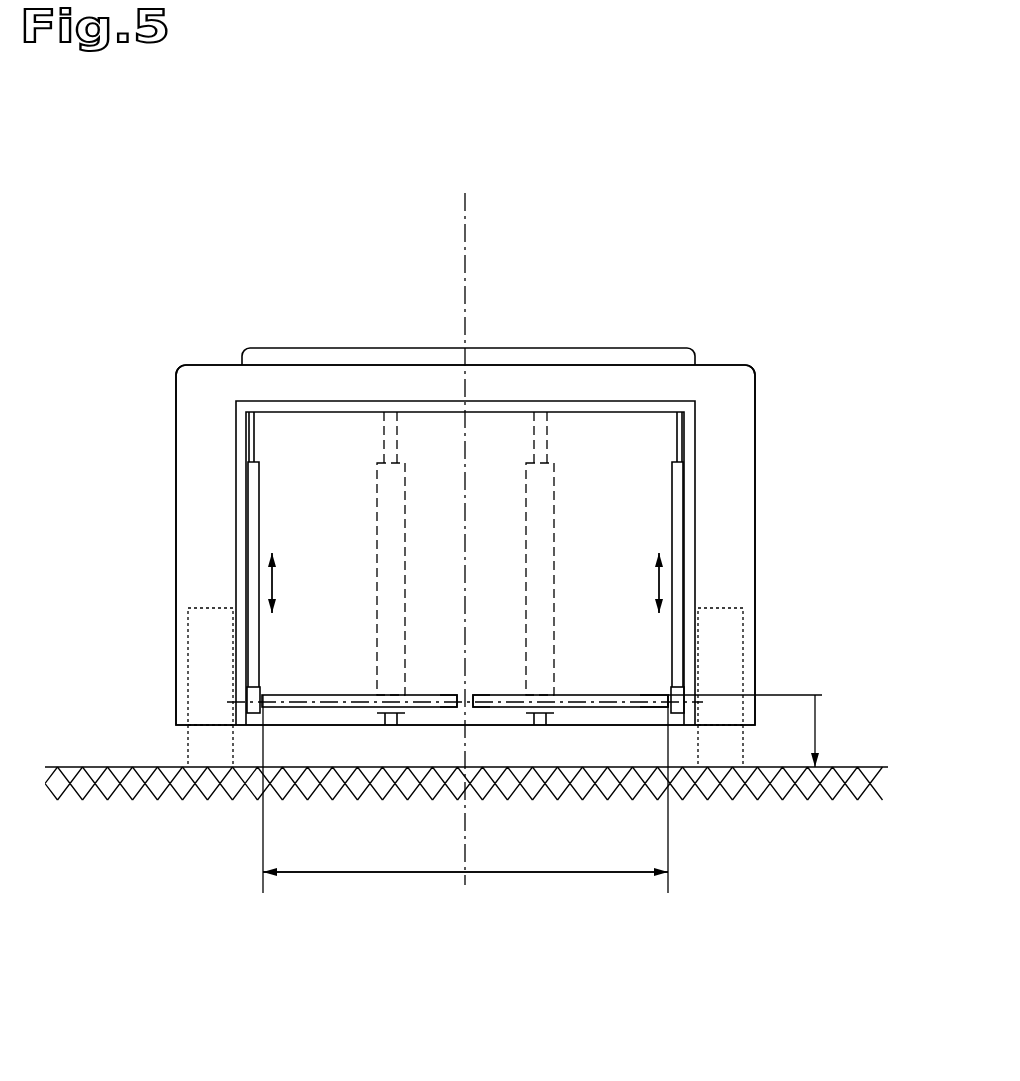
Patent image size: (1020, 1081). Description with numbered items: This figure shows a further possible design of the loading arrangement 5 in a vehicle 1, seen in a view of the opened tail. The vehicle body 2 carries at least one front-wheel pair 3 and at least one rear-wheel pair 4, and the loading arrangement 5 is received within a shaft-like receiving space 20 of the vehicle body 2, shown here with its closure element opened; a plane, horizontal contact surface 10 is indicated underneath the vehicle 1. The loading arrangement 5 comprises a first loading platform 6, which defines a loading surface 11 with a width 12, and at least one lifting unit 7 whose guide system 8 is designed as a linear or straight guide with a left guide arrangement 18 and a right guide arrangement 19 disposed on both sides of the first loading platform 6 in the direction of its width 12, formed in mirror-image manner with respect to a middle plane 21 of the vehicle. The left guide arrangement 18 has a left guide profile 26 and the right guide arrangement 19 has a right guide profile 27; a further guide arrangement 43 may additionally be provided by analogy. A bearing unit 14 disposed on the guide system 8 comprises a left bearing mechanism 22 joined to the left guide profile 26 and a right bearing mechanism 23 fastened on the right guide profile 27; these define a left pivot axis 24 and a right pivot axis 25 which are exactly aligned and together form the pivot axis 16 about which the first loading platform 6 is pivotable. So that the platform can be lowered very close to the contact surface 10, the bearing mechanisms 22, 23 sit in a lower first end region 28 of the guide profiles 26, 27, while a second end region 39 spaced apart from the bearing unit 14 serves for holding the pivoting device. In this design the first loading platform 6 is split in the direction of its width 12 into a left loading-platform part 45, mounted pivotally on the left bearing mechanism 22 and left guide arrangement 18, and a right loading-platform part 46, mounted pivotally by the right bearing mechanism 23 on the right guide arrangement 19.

The vehicle 1 is at (794, 117).
The vehicle body 2 is at (733, 393).
The front-wheel pair 3 is at (451, 737).
The rear-wheel pair 4 is at (170, 753).
The loading arrangement 5 is at (642, 440).
The first loading platform 6 is at (498, 665).
The lifting unit 7 is at (282, 460).
The guide system 8 is at (653, 488).
The contact surface 10 is at (849, 766).
The loading surface 11 is at (613, 697).
The width 12 is at (427, 887).
The bearing unit 14 is at (465, 790).
The pivot axis 16 is at (330, 702).
The left guide arrangement 18 is at (262, 520).
The right guide arrangement 19 is at (648, 510).
The receiving space 20 is at (627, 544).
The middle plane 21 is at (463, 205).
The left bearing mechanism 22 is at (258, 722).
The right bearing mechanism 23 is at (675, 724).
The left pivot axis 24 is at (277, 697).
The right pivot axis 25 is at (653, 697).
The left guide profile 26 is at (253, 547).
The right guide profile 27 is at (678, 548).
The lower first end region 28 is at (240, 677).
The second end region 39 is at (233, 468).
The further guide arrangement 43 is at (290, 737).
The left loading-platform part 45 is at (458, 704).
The right loading-platform part 46 is at (500, 704).